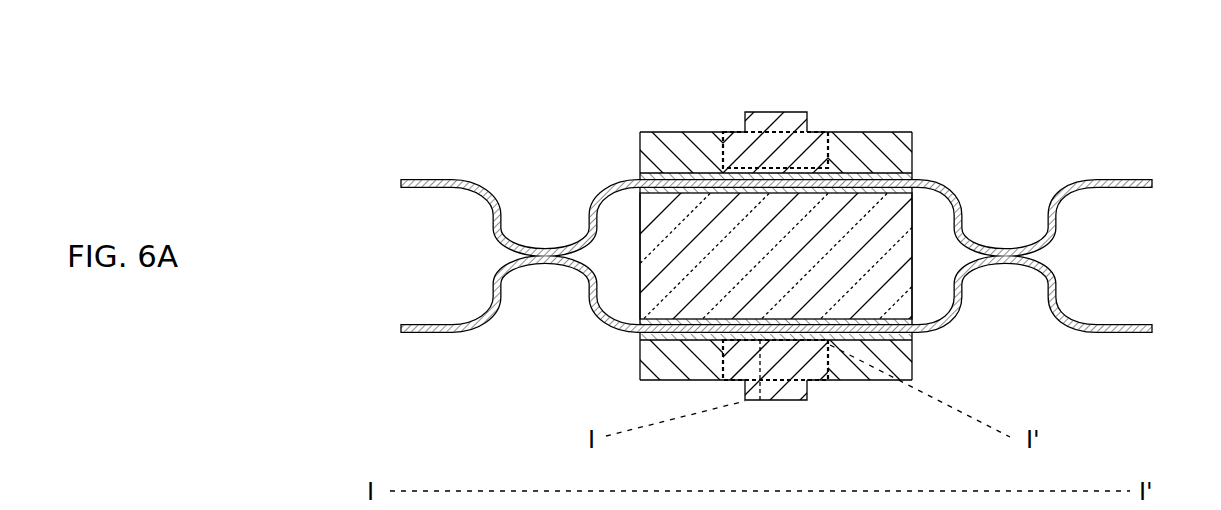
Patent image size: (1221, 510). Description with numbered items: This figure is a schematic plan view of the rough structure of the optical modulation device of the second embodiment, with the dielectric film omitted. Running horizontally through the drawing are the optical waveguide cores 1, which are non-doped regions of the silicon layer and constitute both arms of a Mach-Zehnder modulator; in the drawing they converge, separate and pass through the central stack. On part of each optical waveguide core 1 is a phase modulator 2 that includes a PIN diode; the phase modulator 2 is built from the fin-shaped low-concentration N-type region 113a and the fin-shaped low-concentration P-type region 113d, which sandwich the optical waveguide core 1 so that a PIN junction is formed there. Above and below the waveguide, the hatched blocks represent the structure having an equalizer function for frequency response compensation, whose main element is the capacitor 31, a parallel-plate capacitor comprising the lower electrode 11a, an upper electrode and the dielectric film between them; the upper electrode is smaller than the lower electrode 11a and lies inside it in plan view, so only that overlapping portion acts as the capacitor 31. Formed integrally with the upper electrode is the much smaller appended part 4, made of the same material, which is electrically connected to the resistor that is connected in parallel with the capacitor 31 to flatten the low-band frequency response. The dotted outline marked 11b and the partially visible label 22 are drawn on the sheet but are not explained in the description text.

The optical waveguide core 1 is at (1063, 209).
The phase modulator 2 is at (922, 180).
The appended part 4 is at (776, 126).
The lower electrode 11a is at (872, 150).
The electrode region 11b is at (807, 151).
The capacitor 31 is at (728, 150).
The low-concentration N-type region 113a is at (912, 176).
The low-concentration P-type region 113d is at (914, 190).
The terminal 22 is at (806, 505).